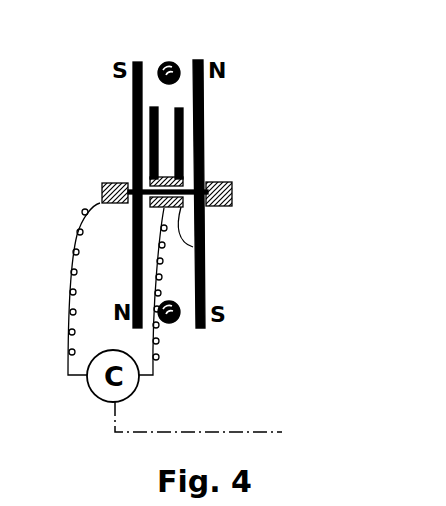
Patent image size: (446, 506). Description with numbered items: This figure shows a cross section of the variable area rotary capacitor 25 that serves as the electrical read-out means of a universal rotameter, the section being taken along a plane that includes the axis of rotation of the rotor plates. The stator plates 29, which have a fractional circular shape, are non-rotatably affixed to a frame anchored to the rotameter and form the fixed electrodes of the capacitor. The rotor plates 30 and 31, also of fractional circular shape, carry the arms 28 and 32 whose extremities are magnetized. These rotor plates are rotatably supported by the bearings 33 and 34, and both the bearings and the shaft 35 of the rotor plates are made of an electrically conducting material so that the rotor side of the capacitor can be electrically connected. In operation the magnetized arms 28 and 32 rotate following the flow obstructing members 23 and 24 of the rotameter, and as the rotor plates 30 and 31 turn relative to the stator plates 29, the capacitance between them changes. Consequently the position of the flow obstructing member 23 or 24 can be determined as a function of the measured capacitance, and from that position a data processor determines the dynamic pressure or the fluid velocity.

The flow obstructing member 23 is at (176, 321).
The flow obstructing member 24 is at (164, 63).
The variable area rotary capacitor 25 is at (220, 262).
The arm 28 is at (135, 120).
The stator plates 29 is at (176, 140).
The rotor plate 30 is at (148, 102).
The rotor plate 31 is at (192, 107).
The arm 32 is at (204, 113).
The bearing 33 is at (105, 183).
The bearing 34 is at (218, 183).
The shaft 35 is at (205, 238).